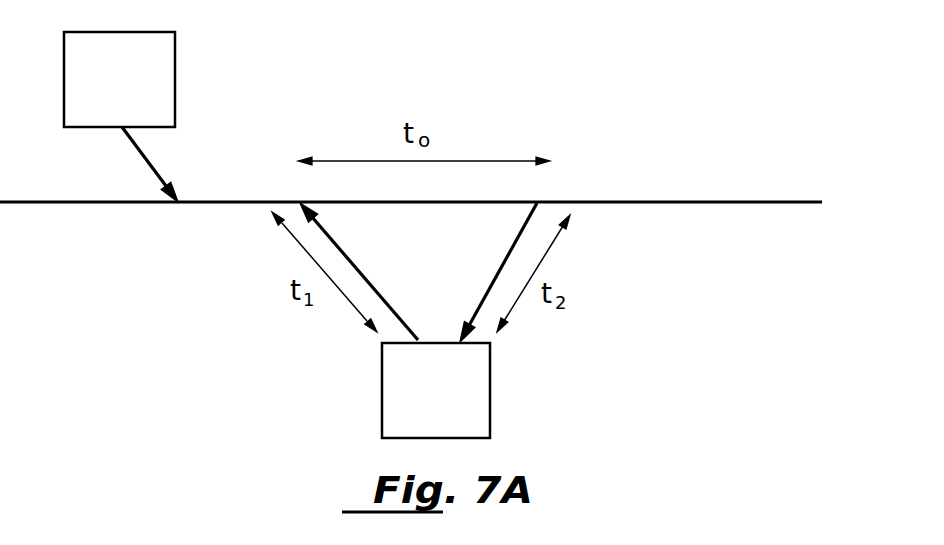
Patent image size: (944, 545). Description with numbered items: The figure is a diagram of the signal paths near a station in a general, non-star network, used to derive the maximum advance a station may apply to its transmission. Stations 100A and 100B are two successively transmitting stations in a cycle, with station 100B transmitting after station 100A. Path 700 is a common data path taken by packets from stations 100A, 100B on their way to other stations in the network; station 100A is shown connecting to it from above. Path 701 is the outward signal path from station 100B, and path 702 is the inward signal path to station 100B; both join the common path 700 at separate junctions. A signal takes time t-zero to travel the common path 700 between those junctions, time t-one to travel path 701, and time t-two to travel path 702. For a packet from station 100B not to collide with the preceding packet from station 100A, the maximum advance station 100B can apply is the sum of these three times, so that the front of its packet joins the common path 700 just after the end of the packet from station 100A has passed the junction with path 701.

The common data path 700 is at (653, 202).
The outward signal path 701 is at (360, 265).
The inward signal path 702 is at (497, 275).
The station 100A is at (121, 117).
The station 100B is at (436, 390).